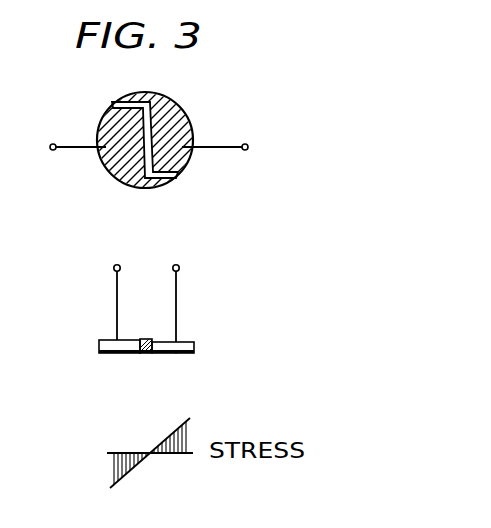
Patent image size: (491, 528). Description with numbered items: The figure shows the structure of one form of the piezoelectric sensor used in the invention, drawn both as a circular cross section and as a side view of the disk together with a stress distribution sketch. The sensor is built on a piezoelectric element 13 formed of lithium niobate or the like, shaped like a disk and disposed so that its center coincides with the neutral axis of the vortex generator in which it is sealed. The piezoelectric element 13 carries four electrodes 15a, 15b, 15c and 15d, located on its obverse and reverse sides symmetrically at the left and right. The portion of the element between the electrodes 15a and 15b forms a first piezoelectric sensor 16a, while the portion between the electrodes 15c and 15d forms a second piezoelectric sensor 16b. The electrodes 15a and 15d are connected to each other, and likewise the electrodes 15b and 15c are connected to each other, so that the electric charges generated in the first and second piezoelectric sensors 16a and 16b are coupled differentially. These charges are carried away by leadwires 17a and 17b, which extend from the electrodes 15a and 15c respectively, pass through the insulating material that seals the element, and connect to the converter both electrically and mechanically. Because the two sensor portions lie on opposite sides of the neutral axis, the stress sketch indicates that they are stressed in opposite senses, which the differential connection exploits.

The piezoelectric element 13 is at (128, 100).
The electrode 15a is at (117, 168).
The electrode 15b is at (115, 354).
The electrode 15c is at (179, 160).
The electrode 15d is at (192, 352).
The first piezoelectric sensor 16a is at (138, 357).
The second piezoelectric sensor 16b is at (176, 357).
The leadwire 17a is at (116, 282).
The leadwire 17b is at (178, 284).